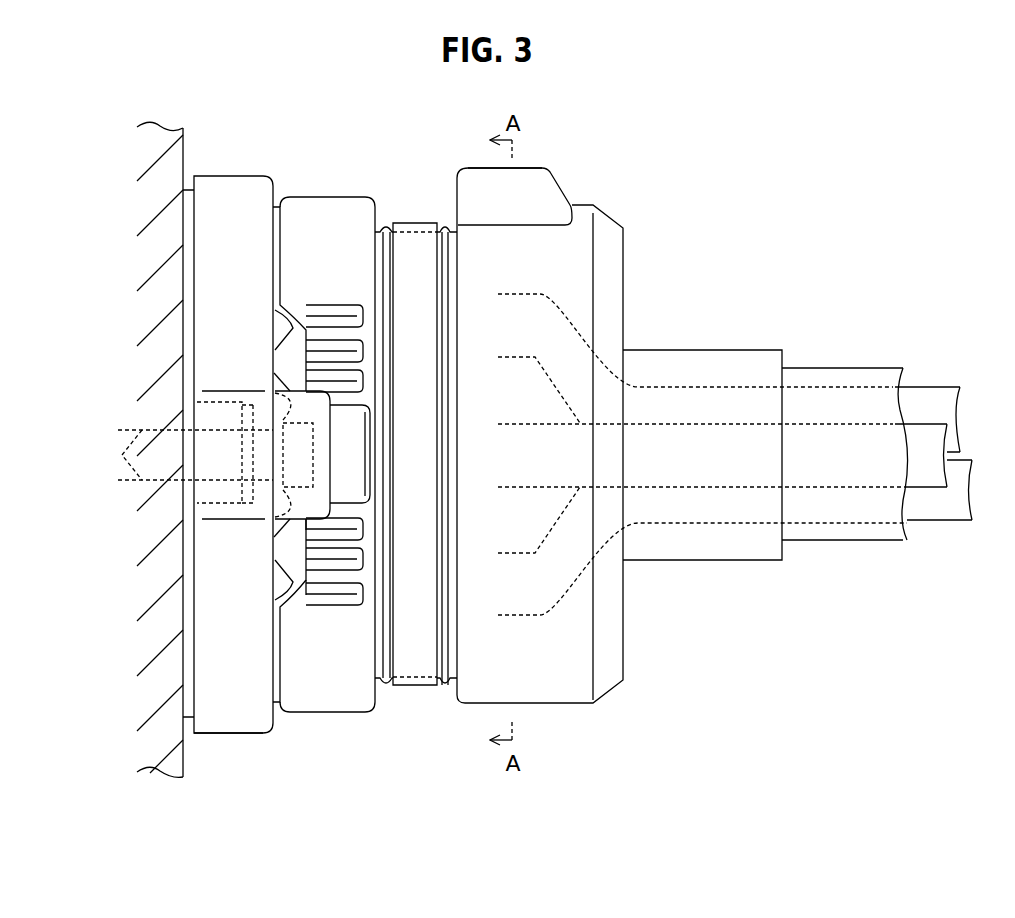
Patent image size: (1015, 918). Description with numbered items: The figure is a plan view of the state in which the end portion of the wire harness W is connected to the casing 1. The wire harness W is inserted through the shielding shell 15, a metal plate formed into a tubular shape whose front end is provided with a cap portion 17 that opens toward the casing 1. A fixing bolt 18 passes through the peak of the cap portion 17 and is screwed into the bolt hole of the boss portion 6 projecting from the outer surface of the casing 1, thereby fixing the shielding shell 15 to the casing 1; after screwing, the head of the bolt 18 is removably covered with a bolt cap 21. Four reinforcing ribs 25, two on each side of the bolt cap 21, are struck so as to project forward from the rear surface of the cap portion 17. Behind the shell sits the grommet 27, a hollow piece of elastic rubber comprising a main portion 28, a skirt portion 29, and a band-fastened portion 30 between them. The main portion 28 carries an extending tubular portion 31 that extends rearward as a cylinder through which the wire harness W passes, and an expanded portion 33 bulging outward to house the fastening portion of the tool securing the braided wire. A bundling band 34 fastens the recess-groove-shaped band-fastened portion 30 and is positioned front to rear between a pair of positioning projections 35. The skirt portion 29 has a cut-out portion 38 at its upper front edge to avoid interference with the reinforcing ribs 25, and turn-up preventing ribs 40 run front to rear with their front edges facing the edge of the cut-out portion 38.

The casing 1 is at (160, 779).
The boss portion 6 is at (220, 415).
The shielding shell 15 is at (248, 740).
The cap portion 17 is at (212, 723).
The fixing bolt 18 is at (300, 457).
The bolt cap 21 is at (315, 405).
The reinforcing ribs 25 is at (283, 385).
The grommet 27 is at (615, 213).
The main portion 28 is at (550, 688).
The skirt portion 29 is at (338, 695).
The band-fastened portion 30 is at (450, 686).
The extending tubular portion 31 is at (707, 352).
The expanded portion 33 is at (540, 182).
The bundling band 34 is at (418, 226).
The positioning projections 35 is at (385, 228).
The cut-out portion 38 is at (295, 553).
The turn-up preventing ribs 40 is at (360, 523).
The wire harness W is at (838, 380).